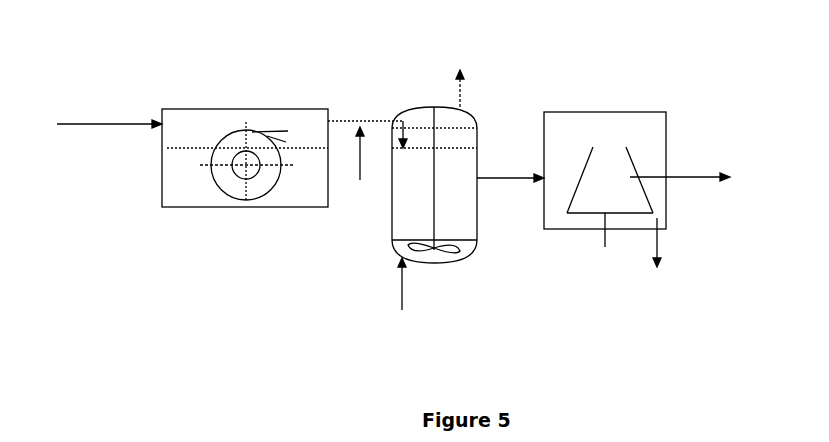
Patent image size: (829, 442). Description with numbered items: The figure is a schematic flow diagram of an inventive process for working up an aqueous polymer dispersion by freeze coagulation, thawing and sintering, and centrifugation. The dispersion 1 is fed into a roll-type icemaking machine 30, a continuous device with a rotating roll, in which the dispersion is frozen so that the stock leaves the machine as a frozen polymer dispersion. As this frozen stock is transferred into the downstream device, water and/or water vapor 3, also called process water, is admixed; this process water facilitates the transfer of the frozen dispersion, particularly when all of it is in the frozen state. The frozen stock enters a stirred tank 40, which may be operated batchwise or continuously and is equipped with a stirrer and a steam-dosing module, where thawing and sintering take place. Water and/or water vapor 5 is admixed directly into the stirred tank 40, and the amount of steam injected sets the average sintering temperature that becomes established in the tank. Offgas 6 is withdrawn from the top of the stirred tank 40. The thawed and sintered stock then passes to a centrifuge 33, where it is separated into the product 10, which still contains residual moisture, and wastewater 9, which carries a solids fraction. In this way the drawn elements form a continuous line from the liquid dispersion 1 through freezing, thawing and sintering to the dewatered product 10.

The dispersion 1 is at (96, 124).
The roll-type icemaking machine 30 is at (245, 136).
The water and/or water vapor 3 is at (360, 171).
The stirred tank 40 is at (434, 164).
The offgas 6 is at (461, 70).
The water and/or water vapor 5 is at (402, 300).
The centrifuge 33 is at (605, 156).
The product 10 is at (697, 178).
The wastewater 9 is at (657, 260).